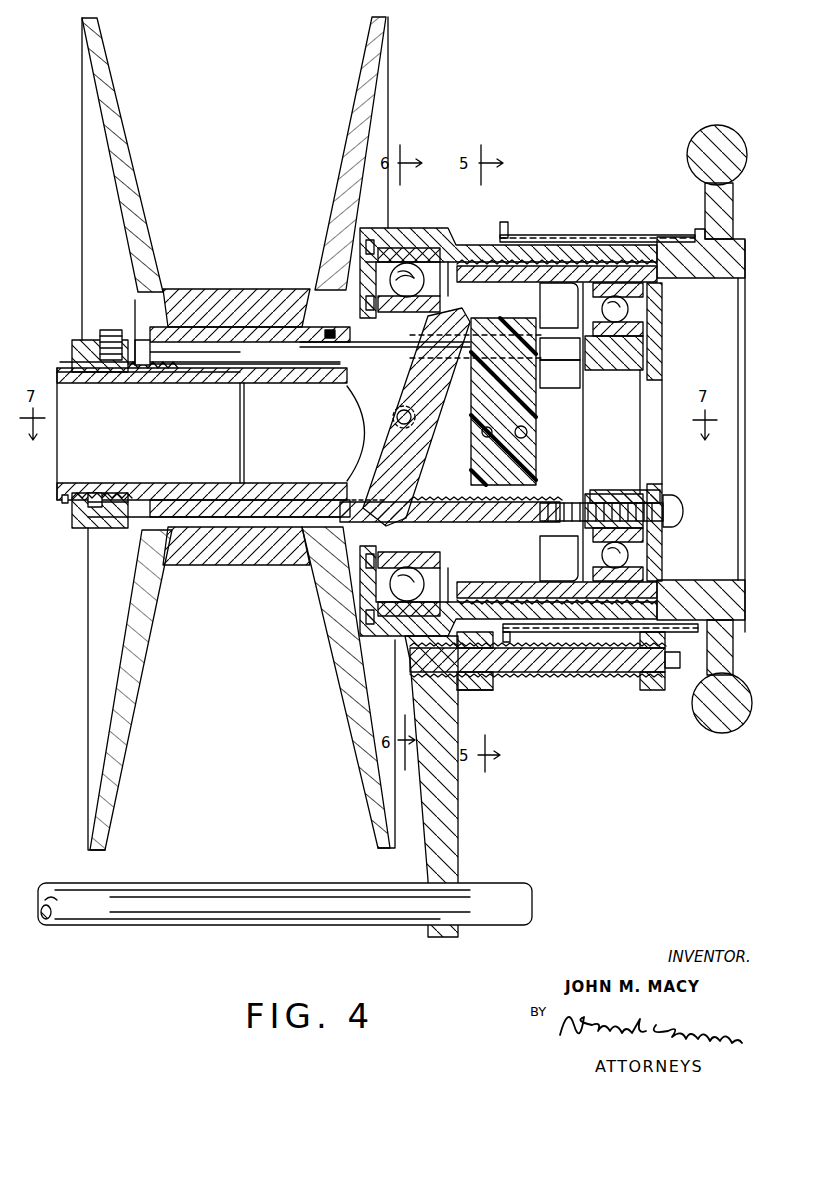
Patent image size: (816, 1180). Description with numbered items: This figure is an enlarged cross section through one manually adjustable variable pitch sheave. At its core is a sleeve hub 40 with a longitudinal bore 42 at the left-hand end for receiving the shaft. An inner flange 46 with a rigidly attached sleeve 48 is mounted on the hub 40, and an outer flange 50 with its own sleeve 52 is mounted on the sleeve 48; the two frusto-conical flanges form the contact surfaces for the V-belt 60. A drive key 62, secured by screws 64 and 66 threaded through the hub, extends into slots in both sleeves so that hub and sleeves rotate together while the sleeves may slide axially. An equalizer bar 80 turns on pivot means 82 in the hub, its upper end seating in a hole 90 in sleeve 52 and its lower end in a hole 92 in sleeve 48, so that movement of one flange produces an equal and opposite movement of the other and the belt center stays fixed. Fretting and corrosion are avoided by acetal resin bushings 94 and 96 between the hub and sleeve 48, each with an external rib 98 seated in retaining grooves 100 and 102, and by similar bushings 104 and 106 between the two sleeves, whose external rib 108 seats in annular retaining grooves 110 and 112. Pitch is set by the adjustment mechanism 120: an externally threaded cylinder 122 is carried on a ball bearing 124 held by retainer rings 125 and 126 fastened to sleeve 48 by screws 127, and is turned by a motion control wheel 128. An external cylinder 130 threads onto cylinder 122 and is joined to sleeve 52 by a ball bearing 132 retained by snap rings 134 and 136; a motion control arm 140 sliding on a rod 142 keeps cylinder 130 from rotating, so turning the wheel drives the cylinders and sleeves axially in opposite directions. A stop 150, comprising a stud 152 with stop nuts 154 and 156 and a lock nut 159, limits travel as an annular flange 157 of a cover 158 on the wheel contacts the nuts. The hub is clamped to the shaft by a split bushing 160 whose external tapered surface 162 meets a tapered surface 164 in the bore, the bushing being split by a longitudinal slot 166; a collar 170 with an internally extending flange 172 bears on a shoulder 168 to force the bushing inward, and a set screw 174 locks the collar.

The sleeve hub 40 is at (272, 517).
The longitudinal bore 42 is at (264, 510).
The inner flange 46 is at (120, 134).
The sleeve 48 is at (440, 506).
The outer flange 50 is at (350, 120).
The sleeve 52 is at (558, 512).
The V-belt 60 is at (238, 302).
The drive key 62 is at (528, 408).
The screw 64 is at (481, 432).
The screw 66 is at (528, 432).
The equalizer bar 80 is at (403, 398).
The pivot means 82 is at (412, 419).
The hole 90 is at (451, 320).
The hole 92 is at (382, 518).
The bushing 94 is at (182, 366).
The bushing 96 is at (460, 350).
The external rib 98 is at (158, 354).
The retaining groove 100 is at (150, 350).
The retaining groove 102 is at (536, 366).
The bushing 104 is at (350, 344).
The bushing 106 is at (542, 340).
The external rib 108 is at (336, 344).
The annular retaining groove 110 is at (324, 335).
The annular retaining groove 112 is at (536, 292).
The adjustment mechanism 120 is at (604, 224).
The externally threaded cylinder 122 is at (648, 584).
The ball bearing 124 is at (640, 309).
The retainer ring 125 is at (634, 470).
The retainer ring 126 is at (650, 355).
The screw 127 is at (666, 506).
The motion control wheel 128 is at (730, 170).
The external cylinder 130 is at (480, 244).
The ball bearing 132 is at (376, 266).
The snap ring 134 is at (380, 298).
The snap ring 136 is at (366, 246).
The motion control arm 140 is at (456, 796).
The rod 142 is at (210, 926).
The abutment or stop 150 is at (567, 678).
The threaded shaft or stud 152 is at (620, 682).
The stop nut 154 is at (488, 686).
The stop nut 156 is at (664, 672).
The annular flange 157 is at (508, 224).
The cover 158 is at (588, 630).
The lock nut 159 is at (466, 690).
The split bushing 160 is at (232, 445).
The external tapered surface 162 is at (240, 382).
The tapered surface 164 is at (180, 512).
The longitudinal slot 166 is at (95, 381).
The shoulder 168 is at (92, 496).
The collar 170 is at (90, 528).
The internally extending flange 172 is at (80, 494).
The set screw 174 is at (98, 350).